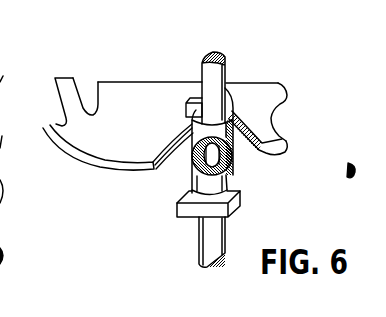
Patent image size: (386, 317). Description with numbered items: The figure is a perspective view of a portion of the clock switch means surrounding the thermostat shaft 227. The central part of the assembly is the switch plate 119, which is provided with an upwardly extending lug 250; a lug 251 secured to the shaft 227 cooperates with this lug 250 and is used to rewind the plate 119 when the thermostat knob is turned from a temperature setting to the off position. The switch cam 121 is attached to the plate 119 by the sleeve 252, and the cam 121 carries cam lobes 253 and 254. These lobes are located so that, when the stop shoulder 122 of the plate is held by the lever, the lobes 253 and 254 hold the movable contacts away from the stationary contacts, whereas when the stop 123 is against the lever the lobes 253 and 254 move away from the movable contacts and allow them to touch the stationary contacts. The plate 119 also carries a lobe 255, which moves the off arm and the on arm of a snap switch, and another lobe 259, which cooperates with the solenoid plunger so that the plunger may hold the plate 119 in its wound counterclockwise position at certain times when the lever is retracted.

The switch plate 119 is at (113, 93).
The stop shoulder 122 is at (63, 83).
The stop 123 is at (54, 124).
The lug 251 is at (185, 107).
The shaft 227 is at (216, 52).
The upwardly extending lug 250 is at (228, 117).
The sleeve 252 is at (232, 156).
The cam lobe 253 is at (243, 175).
The lobe 259 is at (272, 95).
The lobe 255 is at (275, 143).
The cam lobe 254 is at (181, 200).
The switch cam 121 is at (229, 204).